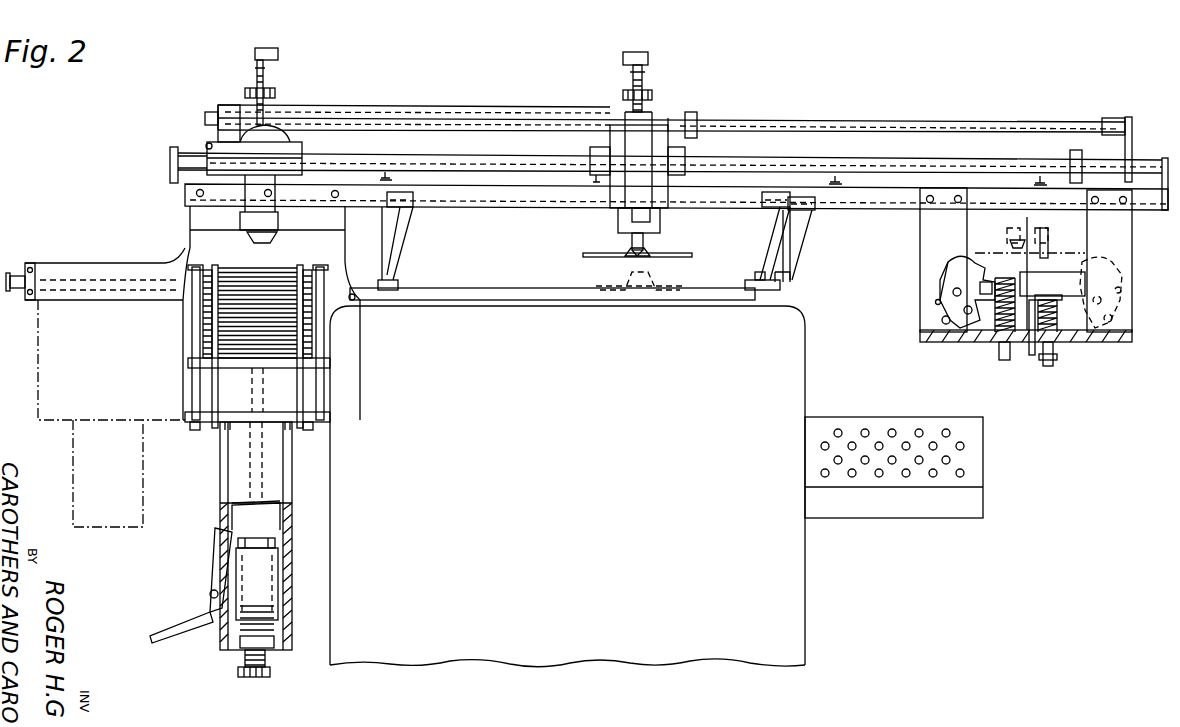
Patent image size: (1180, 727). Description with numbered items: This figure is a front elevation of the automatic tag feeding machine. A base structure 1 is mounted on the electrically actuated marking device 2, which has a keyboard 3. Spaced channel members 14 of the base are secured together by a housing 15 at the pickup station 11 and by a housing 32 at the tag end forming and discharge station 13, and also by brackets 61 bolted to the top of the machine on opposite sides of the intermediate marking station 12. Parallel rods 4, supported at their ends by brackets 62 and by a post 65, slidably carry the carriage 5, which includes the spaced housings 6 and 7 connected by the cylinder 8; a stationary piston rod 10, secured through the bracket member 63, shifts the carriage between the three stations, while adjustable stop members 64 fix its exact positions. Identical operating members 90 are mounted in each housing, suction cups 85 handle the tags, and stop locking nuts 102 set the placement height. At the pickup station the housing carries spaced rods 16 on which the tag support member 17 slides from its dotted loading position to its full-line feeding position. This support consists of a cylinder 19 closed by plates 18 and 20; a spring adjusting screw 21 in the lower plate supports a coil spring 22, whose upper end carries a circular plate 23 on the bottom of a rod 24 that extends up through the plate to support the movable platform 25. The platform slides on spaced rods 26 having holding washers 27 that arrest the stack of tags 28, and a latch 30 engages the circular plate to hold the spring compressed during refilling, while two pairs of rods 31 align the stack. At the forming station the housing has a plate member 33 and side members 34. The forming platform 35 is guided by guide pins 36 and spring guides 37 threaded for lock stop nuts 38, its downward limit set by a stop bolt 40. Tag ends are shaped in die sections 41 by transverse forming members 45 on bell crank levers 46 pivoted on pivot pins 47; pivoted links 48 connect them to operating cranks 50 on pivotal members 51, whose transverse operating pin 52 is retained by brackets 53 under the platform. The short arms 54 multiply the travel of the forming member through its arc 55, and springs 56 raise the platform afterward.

The base structure 1 is at (180, 192).
The marking device 2 is at (795, 323).
The keyboard 3 is at (975, 463).
The parallel rod 4 is at (478, 153).
The carriage 5 is at (453, 108).
The housing 6 is at (698, 160).
The housing 7 is at (290, 146).
The cylinder 8 is at (366, 108).
The piston rod 10 is at (782, 120).
The pickup station 11 is at (266, 266).
The marking station 12 is at (656, 255).
The tag end forming and discharge station 13 is at (1052, 241).
The channel member 14 is at (508, 200).
The housing 15 is at (187, 262).
The spaced rod 16 is at (96, 262).
The tag support member 17 is at (240, 488).
The lower plate 18 is at (277, 650).
The cylinder 19 is at (235, 462).
The plate 20 is at (216, 420).
The spring adjusting screw 21 is at (262, 680).
The coil spring 22 is at (276, 562).
The circular plate 23 is at (276, 546).
The rod 24 is at (216, 410).
The movable platform 25 is at (190, 362).
The spaced rod 26 is at (196, 332).
The washer 27 is at (282, 234).
The stack of tags 28 is at (275, 258).
The latch 30 is at (220, 548).
The rod 31 is at (222, 417).
The housing 32 is at (1122, 241).
The plate member 33 is at (1118, 340).
The side member 34 is at (920, 214).
The forming platform 35 is at (1042, 270).
The guide pin 36 is at (1006, 268).
The spring guide 37 is at (1016, 286).
The lock stop nut 38 is at (1004, 360).
The stop bolt 40 is at (1032, 358).
The die section 41 is at (985, 280).
The transverse forming member 45 is at (960, 262).
The bell crank lever 46 is at (946, 264).
The pivot pin 47 is at (935, 302).
The pivoted link 48 is at (946, 334).
The operating crank 50 is at (980, 328).
The pivotal member 51 is at (953, 291).
The transverse operating pin 52 is at (1033, 300).
The bracket 53 is at (970, 342).
The short arm 54 is at (941, 316).
The arc 55 is at (975, 265).
The spring 56 is at (995, 330).
The bracket 61 is at (394, 236).
The bracket 62 is at (170, 163).
The bracket member 63 is at (1150, 104).
The adjustable stop member 64 is at (206, 146).
The post 65 is at (386, 176).
The suction cup 85 is at (272, 243).
The operating member 90 is at (282, 222).
The stop locking nut 102 is at (248, 91).